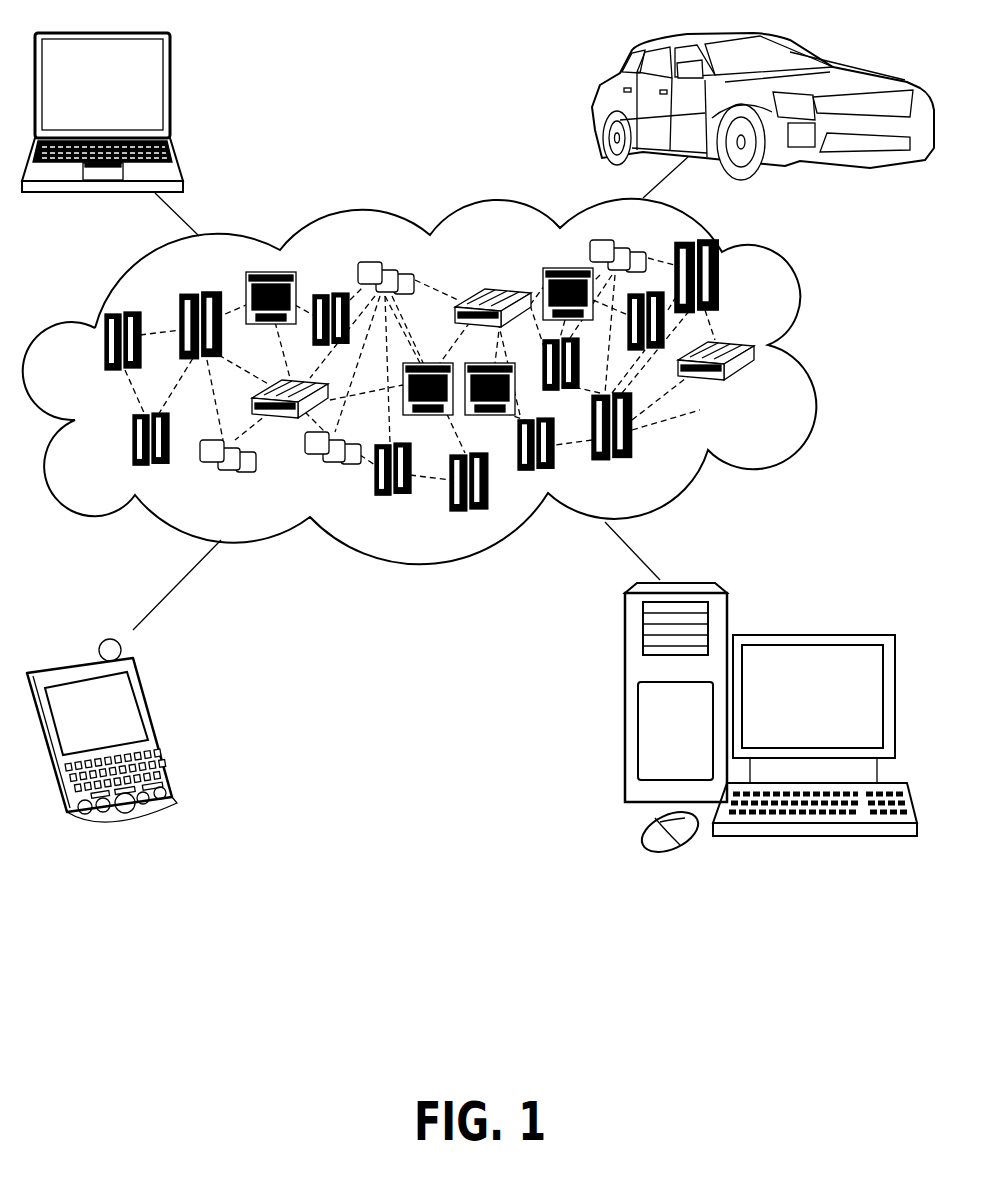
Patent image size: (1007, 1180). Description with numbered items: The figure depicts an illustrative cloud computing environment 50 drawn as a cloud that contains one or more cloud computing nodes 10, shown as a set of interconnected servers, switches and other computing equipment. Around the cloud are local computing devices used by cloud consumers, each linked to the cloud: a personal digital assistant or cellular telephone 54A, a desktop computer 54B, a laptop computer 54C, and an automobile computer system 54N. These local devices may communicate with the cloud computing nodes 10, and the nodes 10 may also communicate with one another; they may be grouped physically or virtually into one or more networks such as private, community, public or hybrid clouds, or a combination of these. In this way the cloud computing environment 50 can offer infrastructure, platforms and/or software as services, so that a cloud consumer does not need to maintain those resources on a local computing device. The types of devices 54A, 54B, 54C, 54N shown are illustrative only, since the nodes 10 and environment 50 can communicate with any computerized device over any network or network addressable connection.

The cloud computing nodes 10 is at (762, 389).
The cloud computing environment 50 is at (812, 354).
The personal digital assistant or cellular telephone 54A is at (160, 727).
The desktop computer 54B is at (810, 635).
The laptop computer 54C is at (172, 92).
The automobile computer system 54N is at (597, 108).